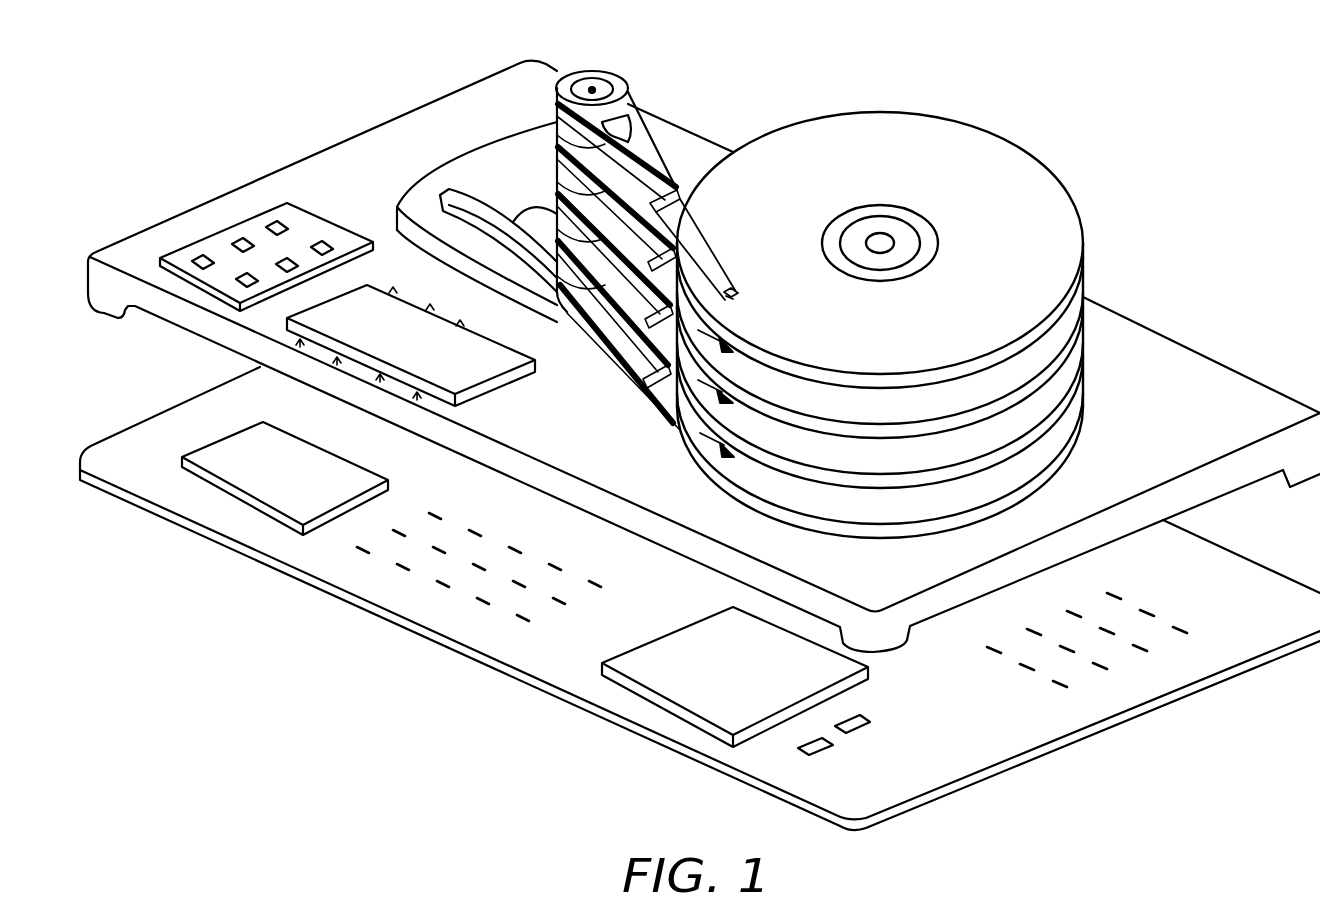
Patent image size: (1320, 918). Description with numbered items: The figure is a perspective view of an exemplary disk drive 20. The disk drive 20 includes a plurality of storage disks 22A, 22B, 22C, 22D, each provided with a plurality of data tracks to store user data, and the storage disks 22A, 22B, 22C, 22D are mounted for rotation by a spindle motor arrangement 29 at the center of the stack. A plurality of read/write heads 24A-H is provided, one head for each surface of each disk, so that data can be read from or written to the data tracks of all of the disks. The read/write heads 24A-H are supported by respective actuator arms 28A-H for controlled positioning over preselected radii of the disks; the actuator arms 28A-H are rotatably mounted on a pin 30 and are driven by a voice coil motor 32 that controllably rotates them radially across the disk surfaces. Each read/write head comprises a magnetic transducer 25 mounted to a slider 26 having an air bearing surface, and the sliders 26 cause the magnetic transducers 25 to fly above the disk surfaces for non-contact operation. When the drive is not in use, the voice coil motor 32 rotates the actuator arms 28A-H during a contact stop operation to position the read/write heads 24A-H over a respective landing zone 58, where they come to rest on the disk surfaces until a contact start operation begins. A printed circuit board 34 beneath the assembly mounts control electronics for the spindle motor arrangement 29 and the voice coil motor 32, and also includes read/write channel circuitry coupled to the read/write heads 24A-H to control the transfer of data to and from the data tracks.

The disk drive 20 is at (148, 153).
The storage disk 22A is at (1083, 228).
The storage disk 22B is at (1083, 320).
The storage disk 22C is at (1083, 362).
The storage disk 22D is at (1083, 422).
The read/write heads 24A-H is at (735, 289).
The magnetic transducer 25 is at (738, 298).
The slider 26 is at (739, 292).
The actuator arms 28A-H is at (660, 195).
The spindle motor arrangement 29 is at (893, 233).
The pin 30 is at (591, 86).
The voice coil motor 32 is at (428, 192).
The printed circuit board 34 is at (1067, 723).
The landing zone 58 is at (938, 230).